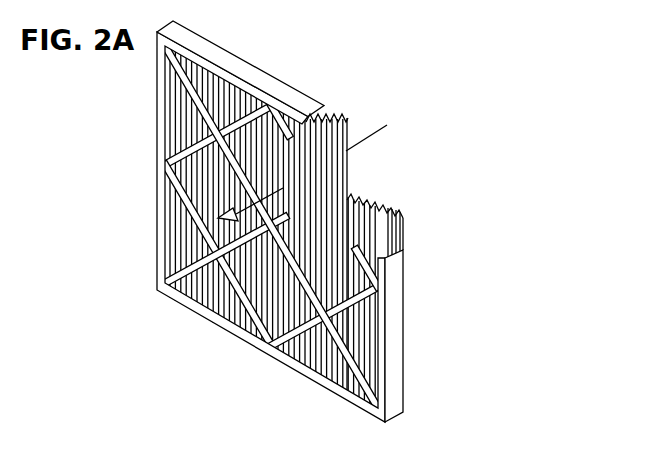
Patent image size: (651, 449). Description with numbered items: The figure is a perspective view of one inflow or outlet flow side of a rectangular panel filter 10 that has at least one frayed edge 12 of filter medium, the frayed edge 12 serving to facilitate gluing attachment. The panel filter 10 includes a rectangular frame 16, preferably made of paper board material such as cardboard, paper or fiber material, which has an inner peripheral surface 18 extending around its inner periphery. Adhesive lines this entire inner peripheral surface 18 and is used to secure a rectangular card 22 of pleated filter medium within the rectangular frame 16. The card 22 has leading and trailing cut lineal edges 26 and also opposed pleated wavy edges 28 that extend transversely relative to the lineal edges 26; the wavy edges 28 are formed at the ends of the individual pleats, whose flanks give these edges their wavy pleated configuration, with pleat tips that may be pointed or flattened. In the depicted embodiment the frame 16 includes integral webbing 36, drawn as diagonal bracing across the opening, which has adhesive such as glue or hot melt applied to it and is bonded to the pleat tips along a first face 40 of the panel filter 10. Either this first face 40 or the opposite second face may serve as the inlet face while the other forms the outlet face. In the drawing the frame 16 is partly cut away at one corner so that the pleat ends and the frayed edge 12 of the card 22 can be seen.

The rectangular panel filter 10 is at (491, 164).
The frayed edge 12 is at (339, 119).
The rectangular frame 16 is at (232, 63).
The inner peripheral surface 18 is at (402, 251).
The rectangular card 22 is at (363, 157).
The lineal edges 26 is at (390, 227).
The pleated wavy edges 28 is at (339, 117).
The integral webbing 36 is at (193, 137).
The first face 40 is at (153, 126).